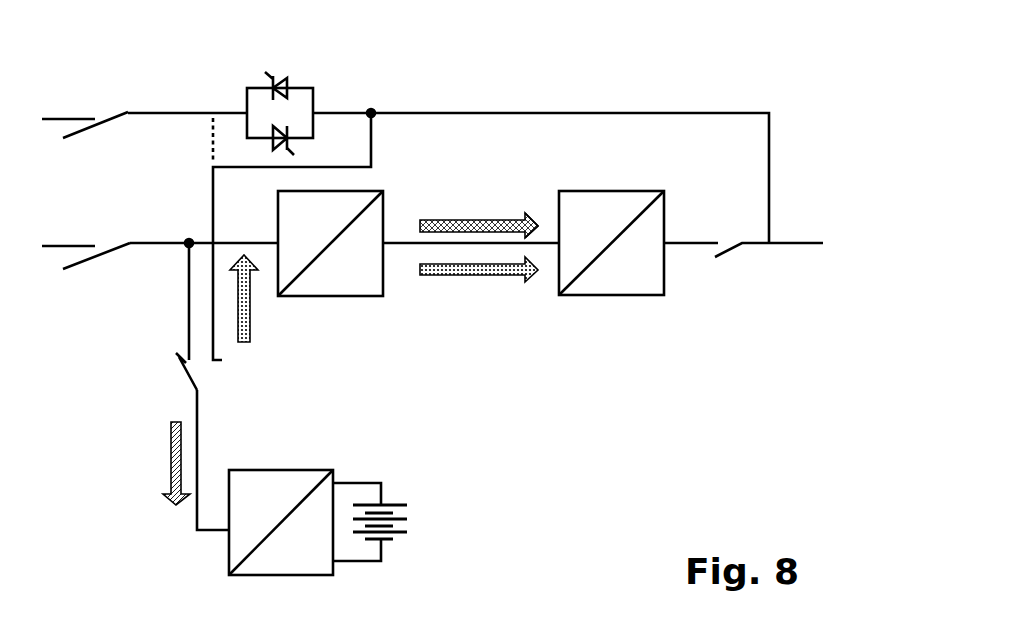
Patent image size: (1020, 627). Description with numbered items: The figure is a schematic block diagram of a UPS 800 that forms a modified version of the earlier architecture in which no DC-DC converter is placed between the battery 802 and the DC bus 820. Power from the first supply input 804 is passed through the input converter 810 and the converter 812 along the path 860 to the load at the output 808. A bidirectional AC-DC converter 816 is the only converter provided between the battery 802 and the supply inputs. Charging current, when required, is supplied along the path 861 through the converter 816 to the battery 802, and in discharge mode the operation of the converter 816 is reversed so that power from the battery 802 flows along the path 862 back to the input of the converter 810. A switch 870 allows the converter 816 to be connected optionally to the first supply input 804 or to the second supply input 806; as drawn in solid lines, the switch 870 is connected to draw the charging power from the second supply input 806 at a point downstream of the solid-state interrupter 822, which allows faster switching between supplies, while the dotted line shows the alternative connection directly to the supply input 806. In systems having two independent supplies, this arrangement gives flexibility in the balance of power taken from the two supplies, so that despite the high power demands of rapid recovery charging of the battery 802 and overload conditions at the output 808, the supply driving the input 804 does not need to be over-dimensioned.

The UPS 800 is at (609, 422).
The battery 802 is at (407, 532).
The first supply input 804 is at (148, 243).
The second supply input 806 is at (150, 113).
The output 808 is at (780, 242).
The input converter 810 is at (384, 288).
The converter 812 is at (632, 300).
The bidirectional AC-DC converter 816 is at (318, 470).
The DC bus 820 is at (405, 242).
The solid-state interrupter 822 is at (313, 90).
The path 860 is at (527, 212).
The path 861 is at (167, 497).
The path 862 is at (252, 270).
The switch 870 is at (199, 388).